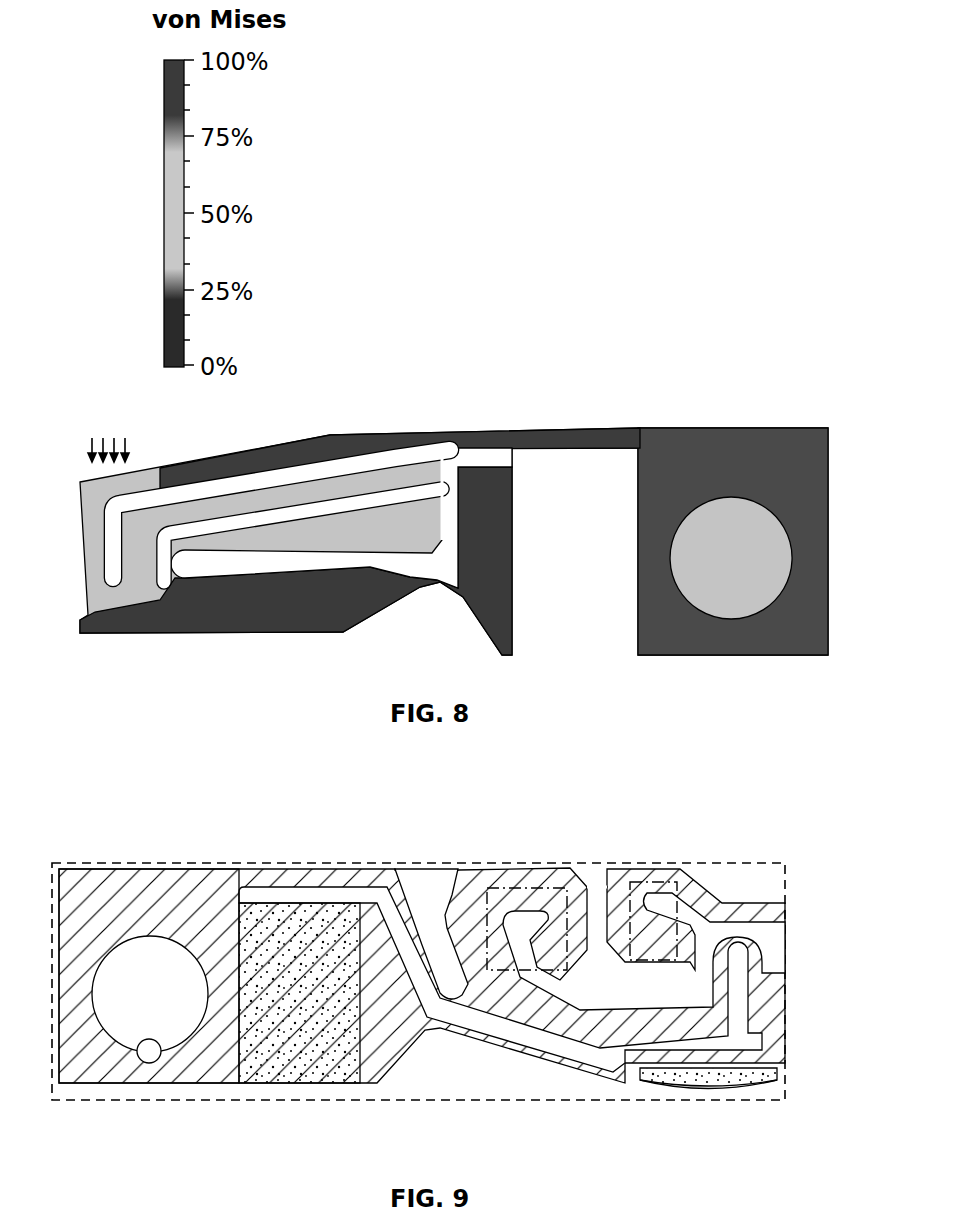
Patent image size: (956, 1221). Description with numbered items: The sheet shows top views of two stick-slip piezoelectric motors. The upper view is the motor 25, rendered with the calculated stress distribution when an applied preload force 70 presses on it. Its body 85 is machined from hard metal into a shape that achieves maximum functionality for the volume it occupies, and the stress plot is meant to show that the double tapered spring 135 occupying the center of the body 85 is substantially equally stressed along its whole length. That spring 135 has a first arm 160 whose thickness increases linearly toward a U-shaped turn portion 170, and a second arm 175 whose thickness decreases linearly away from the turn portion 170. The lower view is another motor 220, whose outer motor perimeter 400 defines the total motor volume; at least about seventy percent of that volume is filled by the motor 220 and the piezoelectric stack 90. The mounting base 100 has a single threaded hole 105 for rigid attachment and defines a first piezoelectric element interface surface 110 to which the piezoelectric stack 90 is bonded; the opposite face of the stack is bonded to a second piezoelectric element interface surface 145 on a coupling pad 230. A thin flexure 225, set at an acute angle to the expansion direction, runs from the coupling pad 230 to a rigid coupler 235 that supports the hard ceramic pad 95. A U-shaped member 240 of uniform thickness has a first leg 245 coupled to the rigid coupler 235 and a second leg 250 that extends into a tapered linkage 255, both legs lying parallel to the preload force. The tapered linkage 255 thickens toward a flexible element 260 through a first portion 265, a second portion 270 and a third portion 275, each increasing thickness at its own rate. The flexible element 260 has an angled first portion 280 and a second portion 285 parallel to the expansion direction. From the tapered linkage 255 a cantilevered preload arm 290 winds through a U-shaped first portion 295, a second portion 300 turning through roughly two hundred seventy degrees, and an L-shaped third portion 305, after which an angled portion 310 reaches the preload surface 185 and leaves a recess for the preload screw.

In FIG. 8, the motor 25 is at (772, 410).
In FIG. 8, the applied preload force 70 is at (88, 438).
In FIG. 8, the body 85 is at (632, 632).
In FIG. 8, the tapered spring 135 is at (397, 487).
In FIG. 8, the first arm 160 is at (297, 548).
In FIG. 8, the turn portion 170 is at (430, 540).
In FIG. 8, the second arm 175 is at (268, 493).
In FIG. 9, the piezoelectric stack 90 is at (277, 1068).
In FIG. 9, the hard ceramic pad 95 is at (736, 1090).
In FIG. 9, the mounting base 100 is at (82, 1075).
In FIG. 9, the threaded hole 105 is at (160, 1052).
In FIG. 9, the first piezoelectric element interface surface 110 is at (280, 942).
In FIG. 9, the second piezoelectric element interface surface 145 is at (358, 1006).
In FIG. 9, the preload surface 185 is at (760, 913).
In FIG. 9, the motor 220 is at (132, 826).
In FIG. 9, the thin flexure 225 is at (443, 1030).
In FIG. 9, the coupling pad 230 is at (376, 1070).
In FIG. 9, the rigid coupler 235 is at (626, 1080).
In FIG. 9, the U-shaped member 240 is at (774, 966).
In FIG. 9, the first leg 245 is at (756, 992).
In FIG. 9, the second leg 250 is at (741, 1012).
In FIG. 9, the tapered linkage 255 is at (527, 1042).
In FIG. 9, the flexible element 260 is at (396, 862).
In FIG. 9, the first portion 265 is at (660, 1020).
In FIG. 9, the second portion 270 is at (573, 1040).
In FIG. 9, the third portion 275 is at (478, 1025).
In FIG. 9, the first portion 280 is at (443, 922).
In FIG. 9, the second portion 285 is at (311, 876).
In FIG. 9, the preload arm 290 is at (591, 862).
In FIG. 9, the first portion 295 is at (525, 886).
In FIG. 9, the second portion 300 is at (586, 1025).
In FIG. 9, the third portion 305 is at (656, 886).
In FIG. 9, the angled portion 310 is at (769, 863).
In FIG. 9, the outer motor perimeter 400 is at (105, 863).